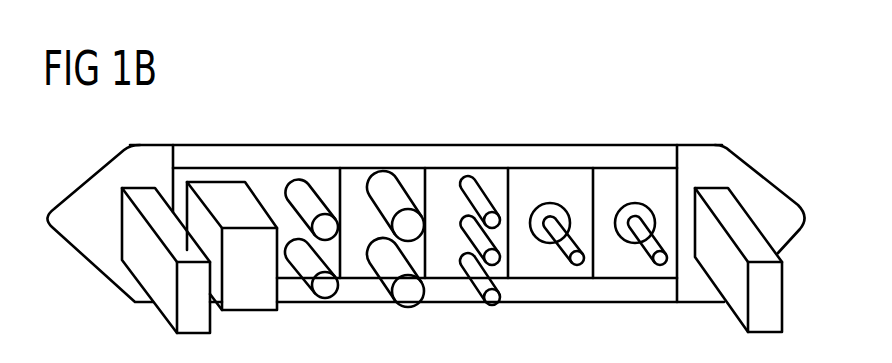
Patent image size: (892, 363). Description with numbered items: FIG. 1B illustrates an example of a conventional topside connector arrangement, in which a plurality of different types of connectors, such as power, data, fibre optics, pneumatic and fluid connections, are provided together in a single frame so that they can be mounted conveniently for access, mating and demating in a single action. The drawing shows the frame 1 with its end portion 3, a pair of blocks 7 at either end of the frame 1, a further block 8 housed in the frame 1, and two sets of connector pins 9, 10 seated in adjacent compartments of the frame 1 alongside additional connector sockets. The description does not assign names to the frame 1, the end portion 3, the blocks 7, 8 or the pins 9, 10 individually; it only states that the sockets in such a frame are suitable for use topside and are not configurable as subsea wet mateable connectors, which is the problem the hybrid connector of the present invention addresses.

The housing 1 is at (628, 153).
The housing end portion 3 is at (760, 189).
The clamping block 7 is at (212, 320).
The contact block 8 is at (258, 168).
The contact pins 9 is at (330, 169).
The contact pins 10 is at (414, 170).